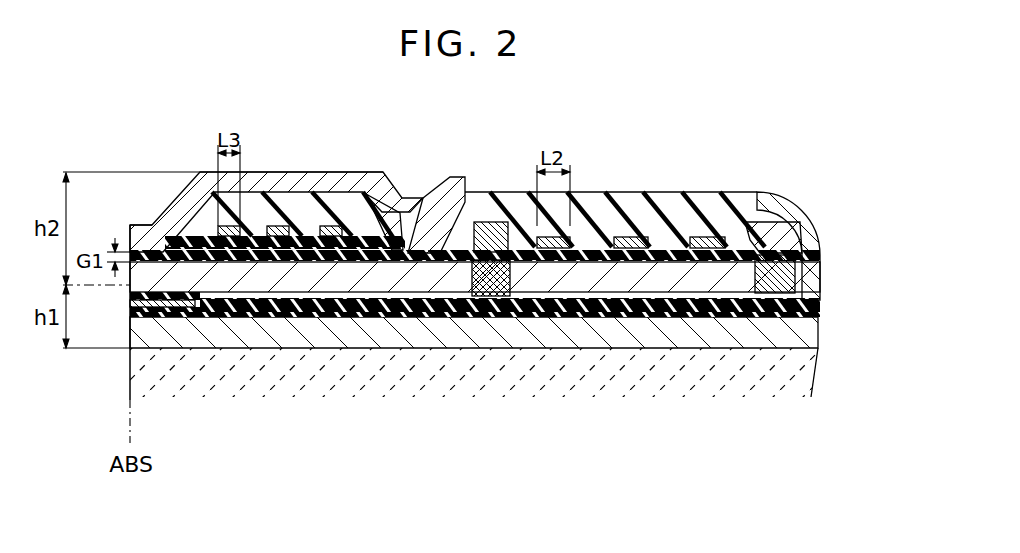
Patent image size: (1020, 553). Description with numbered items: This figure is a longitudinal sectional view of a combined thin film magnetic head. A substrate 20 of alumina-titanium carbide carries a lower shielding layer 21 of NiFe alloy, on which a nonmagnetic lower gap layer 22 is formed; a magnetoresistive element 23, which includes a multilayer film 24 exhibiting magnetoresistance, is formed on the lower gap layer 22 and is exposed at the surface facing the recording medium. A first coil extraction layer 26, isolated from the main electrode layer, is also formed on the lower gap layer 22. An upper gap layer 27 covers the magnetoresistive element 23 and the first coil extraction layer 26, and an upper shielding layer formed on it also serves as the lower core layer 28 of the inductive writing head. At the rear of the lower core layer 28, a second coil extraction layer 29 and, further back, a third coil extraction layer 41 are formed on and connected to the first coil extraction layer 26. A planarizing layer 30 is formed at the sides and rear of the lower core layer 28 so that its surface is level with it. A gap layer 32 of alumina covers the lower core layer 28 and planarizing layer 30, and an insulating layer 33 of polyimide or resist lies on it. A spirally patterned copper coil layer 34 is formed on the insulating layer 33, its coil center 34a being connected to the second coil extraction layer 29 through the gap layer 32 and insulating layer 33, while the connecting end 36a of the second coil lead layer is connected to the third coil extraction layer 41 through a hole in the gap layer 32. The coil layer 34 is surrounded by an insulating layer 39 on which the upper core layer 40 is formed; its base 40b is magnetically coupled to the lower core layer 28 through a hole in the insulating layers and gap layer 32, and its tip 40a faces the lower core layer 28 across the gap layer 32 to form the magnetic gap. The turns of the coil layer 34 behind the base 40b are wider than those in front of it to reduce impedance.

The substrate 20 is at (785, 365).
The lower shielding layer 21 is at (780, 323).
The lower gap layer 22 is at (228, 312).
The magnetoresistive element 23 is at (122, 307).
The multilayer film 24 is at (163, 298).
The first coil extraction layer 26 is at (548, 303).
The upper gap layer 27 is at (365, 303).
The lower core layer 28 is at (292, 290).
The second coil extraction layer 29 is at (488, 295).
The planarizing layer 30 is at (648, 303).
The gap layer 32 is at (727, 248).
The insulating layer 33 is at (365, 220).
The coil layer 34 is at (282, 218).
The coil center 34a is at (490, 222).
The connecting end 36a is at (807, 225).
The insulating layer 39 is at (670, 208).
The upper core layer 40 is at (320, 172).
The tip 40a is at (150, 226).
The base 40b is at (430, 202).
The third coil extraction layer 41 is at (807, 267).